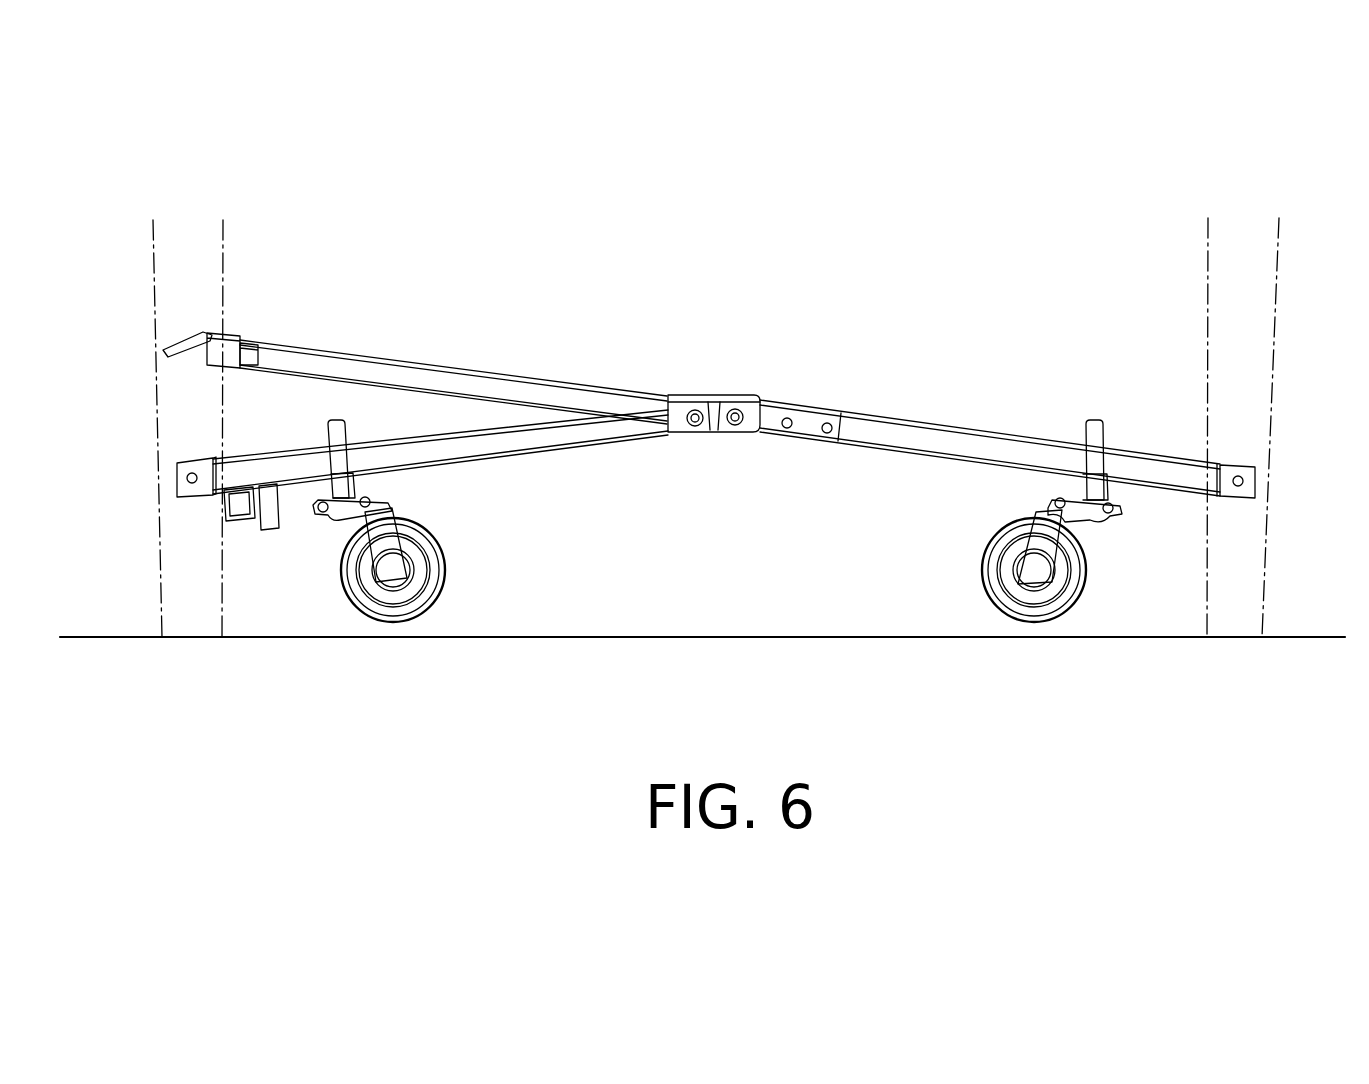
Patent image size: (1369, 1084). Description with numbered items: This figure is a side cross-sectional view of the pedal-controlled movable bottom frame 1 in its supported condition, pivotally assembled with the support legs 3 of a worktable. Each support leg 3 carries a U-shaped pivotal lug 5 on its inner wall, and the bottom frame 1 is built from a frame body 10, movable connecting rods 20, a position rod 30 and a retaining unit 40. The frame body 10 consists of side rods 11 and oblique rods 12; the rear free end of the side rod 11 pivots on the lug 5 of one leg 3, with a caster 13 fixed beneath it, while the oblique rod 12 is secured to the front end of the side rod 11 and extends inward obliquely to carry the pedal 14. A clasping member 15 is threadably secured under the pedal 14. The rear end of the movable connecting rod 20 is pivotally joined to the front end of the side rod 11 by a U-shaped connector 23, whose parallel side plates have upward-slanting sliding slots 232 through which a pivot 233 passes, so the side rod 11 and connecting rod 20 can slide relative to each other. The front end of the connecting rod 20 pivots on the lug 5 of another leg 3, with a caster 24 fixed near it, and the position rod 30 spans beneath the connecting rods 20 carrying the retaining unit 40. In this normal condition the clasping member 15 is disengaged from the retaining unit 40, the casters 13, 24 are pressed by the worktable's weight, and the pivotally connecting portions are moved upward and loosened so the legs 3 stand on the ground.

The pedal-controlled movable bottom frame 1 is at (715, 415).
The support leg 3 is at (153, 413).
The U-shaped pivotal lug 5 is at (173, 487).
The frame body 10 is at (715, 432).
The side rod 11 is at (933, 427).
The oblique rod 12 is at (448, 362).
The caster 13 is at (1083, 597).
The pedal 14 is at (206, 337).
The clasping member 15 is at (255, 360).
The movable connecting rod 20 is at (522, 465).
The U-shaped connector 23 is at (714, 422).
The caster 24 is at (443, 590).
The position rod 30 is at (245, 535).
The retaining unit 40 is at (271, 545).
The sliding slot 232 is at (697, 432).
The pivot 233 is at (737, 432).